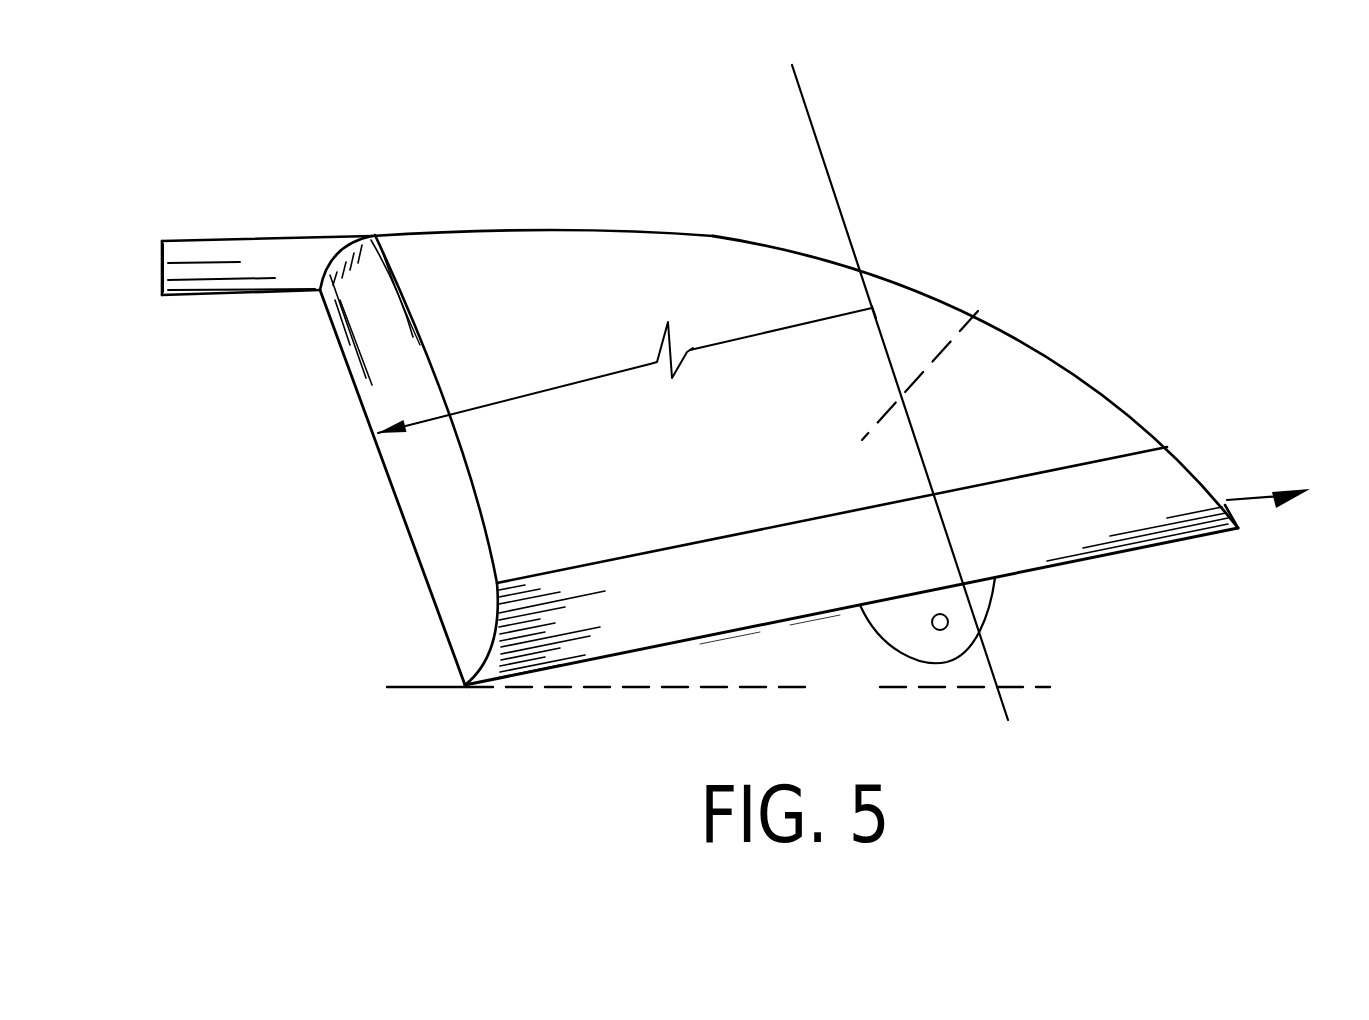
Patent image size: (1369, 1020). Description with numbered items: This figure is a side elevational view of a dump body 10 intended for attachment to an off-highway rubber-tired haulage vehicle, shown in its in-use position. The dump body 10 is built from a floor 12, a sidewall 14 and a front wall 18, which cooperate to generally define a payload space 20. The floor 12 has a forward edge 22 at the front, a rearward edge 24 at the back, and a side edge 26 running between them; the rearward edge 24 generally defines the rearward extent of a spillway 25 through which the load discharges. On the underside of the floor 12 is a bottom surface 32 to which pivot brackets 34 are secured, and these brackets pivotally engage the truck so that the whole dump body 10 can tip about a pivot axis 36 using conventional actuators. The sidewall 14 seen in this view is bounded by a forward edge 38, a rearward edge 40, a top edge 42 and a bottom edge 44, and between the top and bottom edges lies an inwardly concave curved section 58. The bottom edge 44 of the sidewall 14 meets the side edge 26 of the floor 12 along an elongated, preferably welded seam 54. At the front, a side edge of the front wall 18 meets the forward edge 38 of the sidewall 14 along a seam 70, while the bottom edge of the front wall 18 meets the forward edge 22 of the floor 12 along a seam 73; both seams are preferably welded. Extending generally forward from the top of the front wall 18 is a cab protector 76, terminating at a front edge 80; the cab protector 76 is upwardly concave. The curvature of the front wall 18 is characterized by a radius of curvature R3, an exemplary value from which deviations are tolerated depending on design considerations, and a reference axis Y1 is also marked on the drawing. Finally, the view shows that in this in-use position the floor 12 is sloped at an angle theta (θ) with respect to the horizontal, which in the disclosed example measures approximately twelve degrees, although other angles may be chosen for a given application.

The dump body 10 is at (992, 136).
The floor 12 is at (625, 680).
The sidewall 14 is at (716, 427).
The front wall 18 is at (408, 528).
The payload space 20 is at (980, 307).
The forward edge 22 is at (467, 687).
The rearward edge 24 is at (1242, 533).
The spillway 25 is at (1250, 497).
The side edge 26 is at (735, 538).
The bottom surface 32 is at (1123, 557).
The pivot brackets 34 is at (940, 664).
The pivot axis 36 is at (948, 622).
The forward edge 38 is at (453, 430).
The rearward edge 40 is at (1060, 352).
The top edge 42 is at (713, 235).
The bottom edge 44 is at (617, 558).
The elongated seam 54 is at (813, 515).
The curved section 58 is at (778, 427).
The seam 70 is at (428, 363).
The seam 73 is at (467, 685).
The cab protector 76 is at (245, 237).
The front edge 80 is at (160, 265).
The vertical reference axis Y1 is at (818, 135).
The radius of curvature R3 is at (720, 343).
The angle θ theta is at (757, 632).